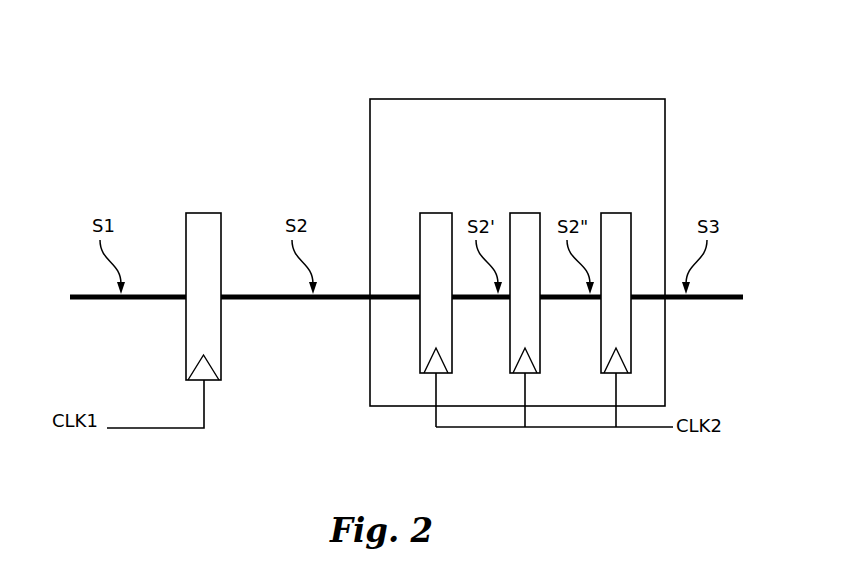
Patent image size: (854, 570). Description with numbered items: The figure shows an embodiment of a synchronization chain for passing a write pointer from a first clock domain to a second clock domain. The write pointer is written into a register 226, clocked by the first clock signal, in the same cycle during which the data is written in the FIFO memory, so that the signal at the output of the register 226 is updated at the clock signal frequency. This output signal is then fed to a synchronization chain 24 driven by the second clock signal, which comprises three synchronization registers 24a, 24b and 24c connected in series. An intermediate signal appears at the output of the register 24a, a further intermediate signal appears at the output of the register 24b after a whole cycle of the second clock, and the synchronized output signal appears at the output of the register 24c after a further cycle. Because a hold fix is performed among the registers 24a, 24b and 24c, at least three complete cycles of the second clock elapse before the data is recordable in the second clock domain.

The synchronization chain 24 is at (608, 99).
The first synchronization register 24a is at (433, 213).
The second synchronization register 24b is at (522, 213).
The third synchronization register 24c is at (613, 213).
The register 226 is at (207, 213).